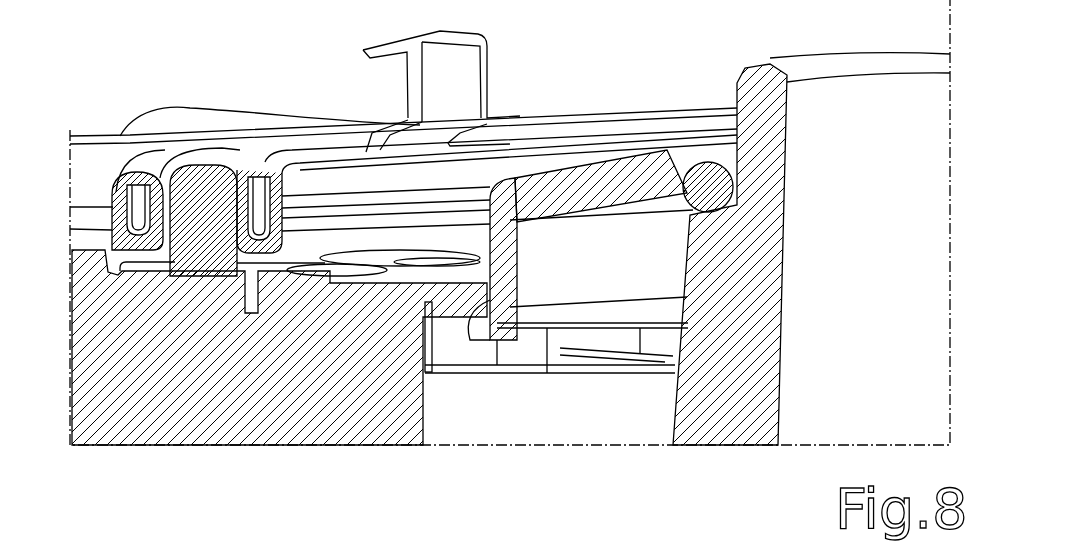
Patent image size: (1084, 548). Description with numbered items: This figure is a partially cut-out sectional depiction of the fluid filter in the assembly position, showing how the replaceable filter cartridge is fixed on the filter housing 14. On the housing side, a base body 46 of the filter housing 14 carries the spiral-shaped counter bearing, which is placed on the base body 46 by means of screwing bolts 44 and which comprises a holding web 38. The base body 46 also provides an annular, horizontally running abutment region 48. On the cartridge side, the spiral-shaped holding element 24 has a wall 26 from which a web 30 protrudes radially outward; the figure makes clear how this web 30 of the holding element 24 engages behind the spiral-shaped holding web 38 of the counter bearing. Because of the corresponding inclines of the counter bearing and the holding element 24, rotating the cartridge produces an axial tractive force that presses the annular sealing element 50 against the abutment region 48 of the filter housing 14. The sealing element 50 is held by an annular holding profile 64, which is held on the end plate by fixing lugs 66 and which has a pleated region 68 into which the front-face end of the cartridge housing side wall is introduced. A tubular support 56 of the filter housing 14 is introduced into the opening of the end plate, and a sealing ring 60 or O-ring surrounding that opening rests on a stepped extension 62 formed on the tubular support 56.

The filter housing 14 is at (100, 172).
The holding element 24 is at (590, 247).
The wall 26 is at (533, 330).
The web 30 is at (450, 327).
The holding web 38 is at (427, 323).
The screwing bolts 44 is at (448, 255).
The base body 46 is at (162, 357).
The abutment region 48 is at (140, 272).
The sealing element 50 is at (207, 178).
The tubular support 56 is at (763, 250).
The sealing ring 60 is at (712, 185).
The stepped extension 62 is at (787, 195).
The holding profile 64 is at (535, 165).
The fixing lugs 66 is at (450, 78).
The pleated region 68 is at (155, 183).